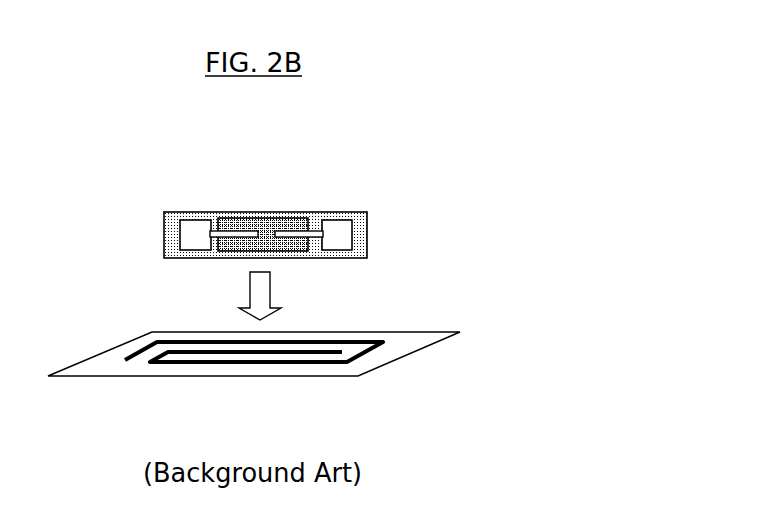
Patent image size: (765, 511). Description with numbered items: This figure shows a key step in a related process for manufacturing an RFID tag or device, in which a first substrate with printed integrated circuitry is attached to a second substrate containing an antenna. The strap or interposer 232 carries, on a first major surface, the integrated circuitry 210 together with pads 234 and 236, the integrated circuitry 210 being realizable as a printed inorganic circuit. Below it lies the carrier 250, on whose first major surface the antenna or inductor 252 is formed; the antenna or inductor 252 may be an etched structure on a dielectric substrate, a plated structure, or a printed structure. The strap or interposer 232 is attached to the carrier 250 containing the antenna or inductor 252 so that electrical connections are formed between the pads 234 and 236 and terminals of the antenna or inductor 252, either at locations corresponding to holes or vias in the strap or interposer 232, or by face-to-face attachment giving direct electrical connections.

The integrated circuitry 210 is at (257, 218).
The strap or interposer 232 is at (370, 242).
The pad 234 is at (197, 221).
The pad 236 is at (343, 221).
The carrier 250 is at (393, 362).
The antenna or inductor 252 is at (370, 341).